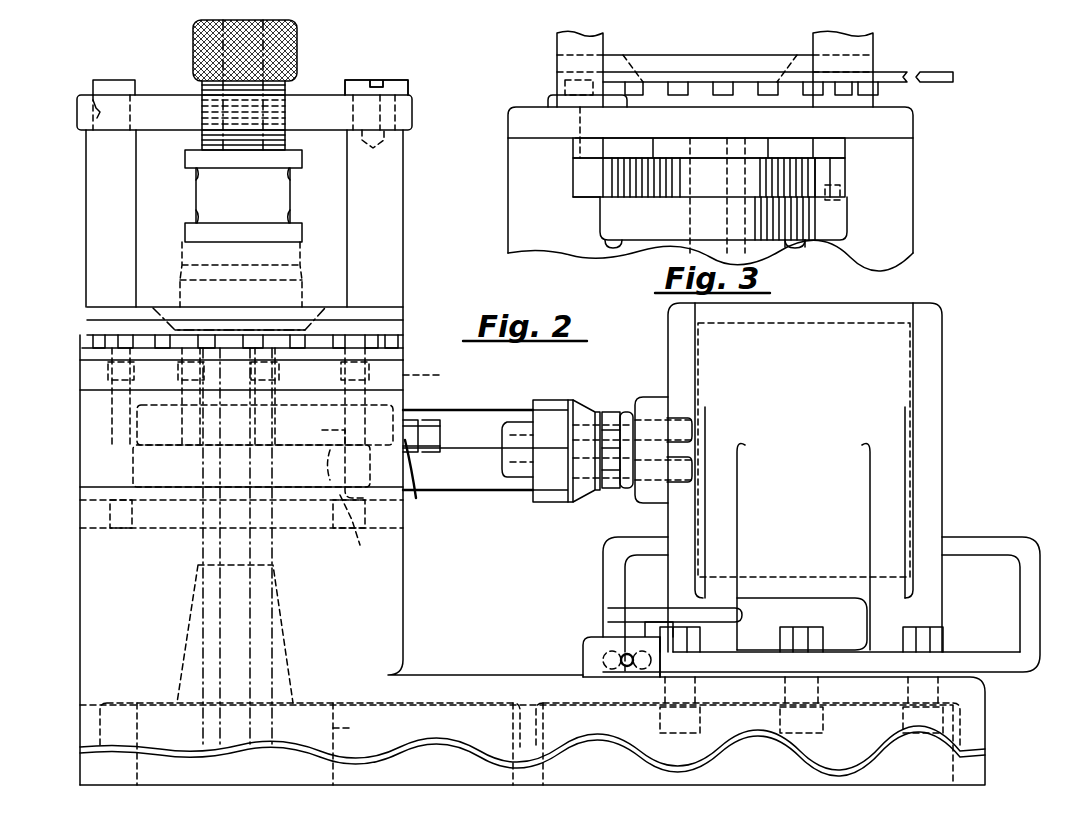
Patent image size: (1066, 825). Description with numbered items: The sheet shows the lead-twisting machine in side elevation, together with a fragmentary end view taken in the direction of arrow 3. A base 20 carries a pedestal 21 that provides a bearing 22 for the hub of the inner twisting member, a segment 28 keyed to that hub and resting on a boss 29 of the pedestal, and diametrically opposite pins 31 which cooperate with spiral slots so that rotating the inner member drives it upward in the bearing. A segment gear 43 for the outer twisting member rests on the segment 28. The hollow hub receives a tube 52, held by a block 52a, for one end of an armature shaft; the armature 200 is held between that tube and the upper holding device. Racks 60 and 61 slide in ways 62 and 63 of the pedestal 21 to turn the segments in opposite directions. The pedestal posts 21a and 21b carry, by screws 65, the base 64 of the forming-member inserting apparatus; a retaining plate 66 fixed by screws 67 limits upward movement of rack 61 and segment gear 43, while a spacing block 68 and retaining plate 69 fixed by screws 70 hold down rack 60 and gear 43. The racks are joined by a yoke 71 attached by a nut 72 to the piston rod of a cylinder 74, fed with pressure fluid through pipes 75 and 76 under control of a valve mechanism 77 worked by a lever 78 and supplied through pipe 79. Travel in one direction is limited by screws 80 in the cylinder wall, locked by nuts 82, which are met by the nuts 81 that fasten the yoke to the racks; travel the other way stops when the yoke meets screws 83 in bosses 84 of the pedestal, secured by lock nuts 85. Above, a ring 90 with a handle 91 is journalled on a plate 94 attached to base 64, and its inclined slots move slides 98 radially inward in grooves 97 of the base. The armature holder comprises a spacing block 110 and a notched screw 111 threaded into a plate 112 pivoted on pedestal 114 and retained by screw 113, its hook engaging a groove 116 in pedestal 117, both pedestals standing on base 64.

In FIG. 2, the arrow 3 is at (38, 372).
In FIG. 2, the base 20 is at (972, 708).
In FIG. 2, the pedestal 21 is at (404, 580).
In FIG. 3, the post 21a is at (520, 157).
In FIG. 3, the post 21b is at (913, 157).
In FIG. 2, the bearing 22 is at (275, 552).
In FIG. 2, the segment 28 is at (133, 468).
In FIG. 3, the segment 28 is at (790, 222).
In FIG. 3, the boss 29 is at (788, 242).
In FIG. 2, the pins 31 is at (150, 520).
In FIG. 2, the segment gear 43 is at (112, 428).
In FIG. 3, the segment gear 43 is at (630, 180).
In FIG. 2, the tube 52 is at (257, 625).
In FIG. 2, the block 52a is at (355, 728).
In FIG. 2, the rack 60 is at (483, 490).
In FIG. 3, the rack 60 is at (838, 210).
In FIG. 2, the rack 61 is at (478, 414).
In FIG. 3, the rack 61 is at (580, 185).
In FIG. 3, the way 62 is at (840, 242).
In FIG. 3, the way 63 is at (580, 210).
In FIG. 2, the base 64 is at (395, 368).
In FIG. 3, the base 64 is at (905, 130).
In FIG. 2, the screws 65 is at (427, 376).
In FIG. 3, the retaining plate 66 is at (575, 145).
In FIG. 3, the screws 67 is at (575, 155).
In FIG. 3, the spacing block 68 is at (840, 177).
In FIG. 3, the retaining plate 69 is at (845, 152).
In FIG. 3, the screws 70 is at (840, 192).
In FIG. 2, the yoke 71 is at (556, 502).
In FIG. 2, the nut 72 is at (517, 420).
In FIG. 2, the cylinder 74 is at (885, 408).
In FIG. 2, the pipe 75 is at (605, 568).
In FIG. 2, the pipe 76 is at (975, 550).
In FIG. 2, the valve mechanism 77 is at (583, 655).
In FIG. 2, the lever 78 is at (722, 616).
In FIG. 2, the pipe 79 is at (624, 667).
In FIG. 2, the screws 80 is at (608, 410).
In FIG. 2, the nuts 81 is at (590, 410).
In FIG. 2, the nuts 82 is at (628, 412).
In FIG. 2, the screws 83 is at (428, 452).
In FIG. 2, the bosses 84 is at (343, 491).
In FIG. 2, the lock nuts 85 is at (419, 477).
In FIG. 2, the ring 90 is at (88, 323).
In FIG. 3, the ring 90 is at (706, 70).
In FIG. 2, the handle 91 is at (243, 322).
In FIG. 3, the handle 91 is at (905, 76).
In FIG. 2, the plate 94 is at (90, 312).
In FIG. 3, the plate 94 is at (752, 62).
In FIG. 2, the grooves 97 is at (90, 347).
In FIG. 3, the grooves 97 is at (700, 92).
In FIG. 2, the slide 98 is at (248, 342).
In FIG. 3, the slide 98 is at (768, 90).
In FIG. 2, the spacing block 110 is at (290, 188).
In FIG. 2, the screw 111 is at (296, 45).
In FIG. 2, the plate 112 is at (298, 88).
In FIG. 2, the screw 113 is at (395, 88).
In FIG. 2, the pedestal 114 is at (395, 205).
In FIG. 2, the groove 116 is at (88, 136).
In FIG. 2, the pedestal 117 is at (90, 204).
In FIG. 2, the workpiece holder 200 is at (305, 270).